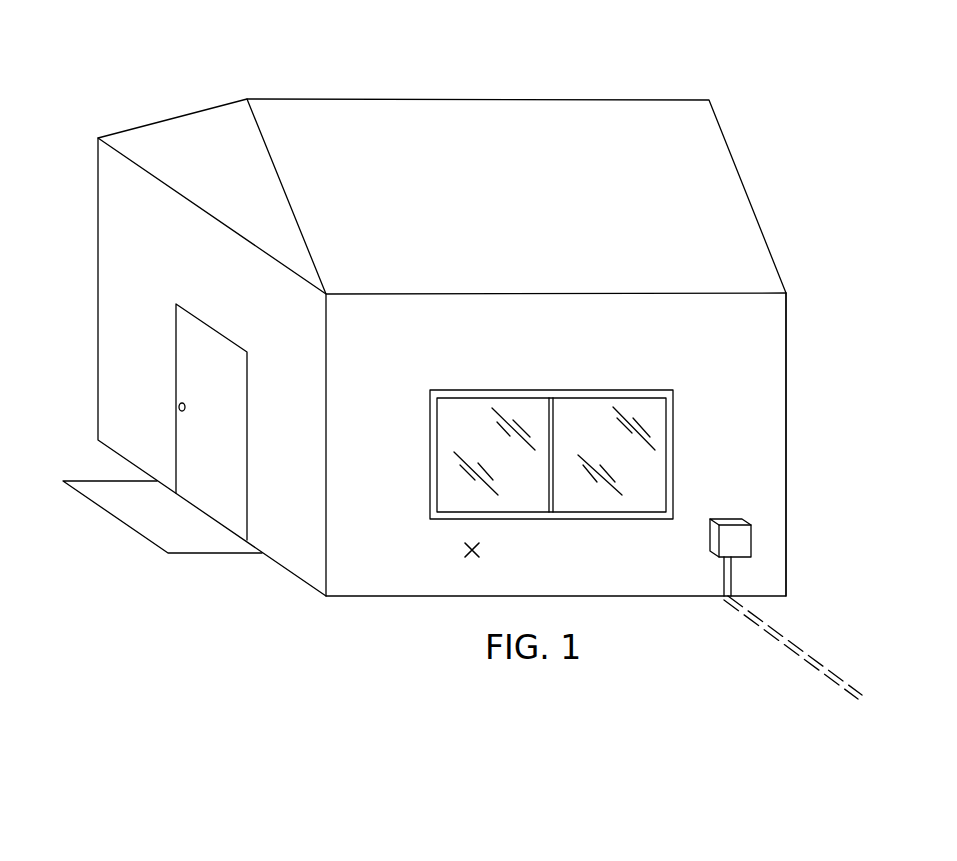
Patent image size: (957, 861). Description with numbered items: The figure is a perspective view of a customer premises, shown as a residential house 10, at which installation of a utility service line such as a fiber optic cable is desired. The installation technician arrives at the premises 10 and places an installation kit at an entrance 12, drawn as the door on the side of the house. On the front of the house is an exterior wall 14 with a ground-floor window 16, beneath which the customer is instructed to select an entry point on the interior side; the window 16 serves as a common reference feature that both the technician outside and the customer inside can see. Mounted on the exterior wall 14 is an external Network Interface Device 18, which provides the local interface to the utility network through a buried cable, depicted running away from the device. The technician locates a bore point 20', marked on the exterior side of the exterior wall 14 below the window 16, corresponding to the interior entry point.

The residential house 10 is at (274, 76).
The entrance 12 is at (183, 370).
The exterior wall 14 is at (768, 327).
The ground-floor window 16 is at (450, 428).
The Network Interface Device 18 is at (752, 543).
The bore point 20' is at (425, 599).